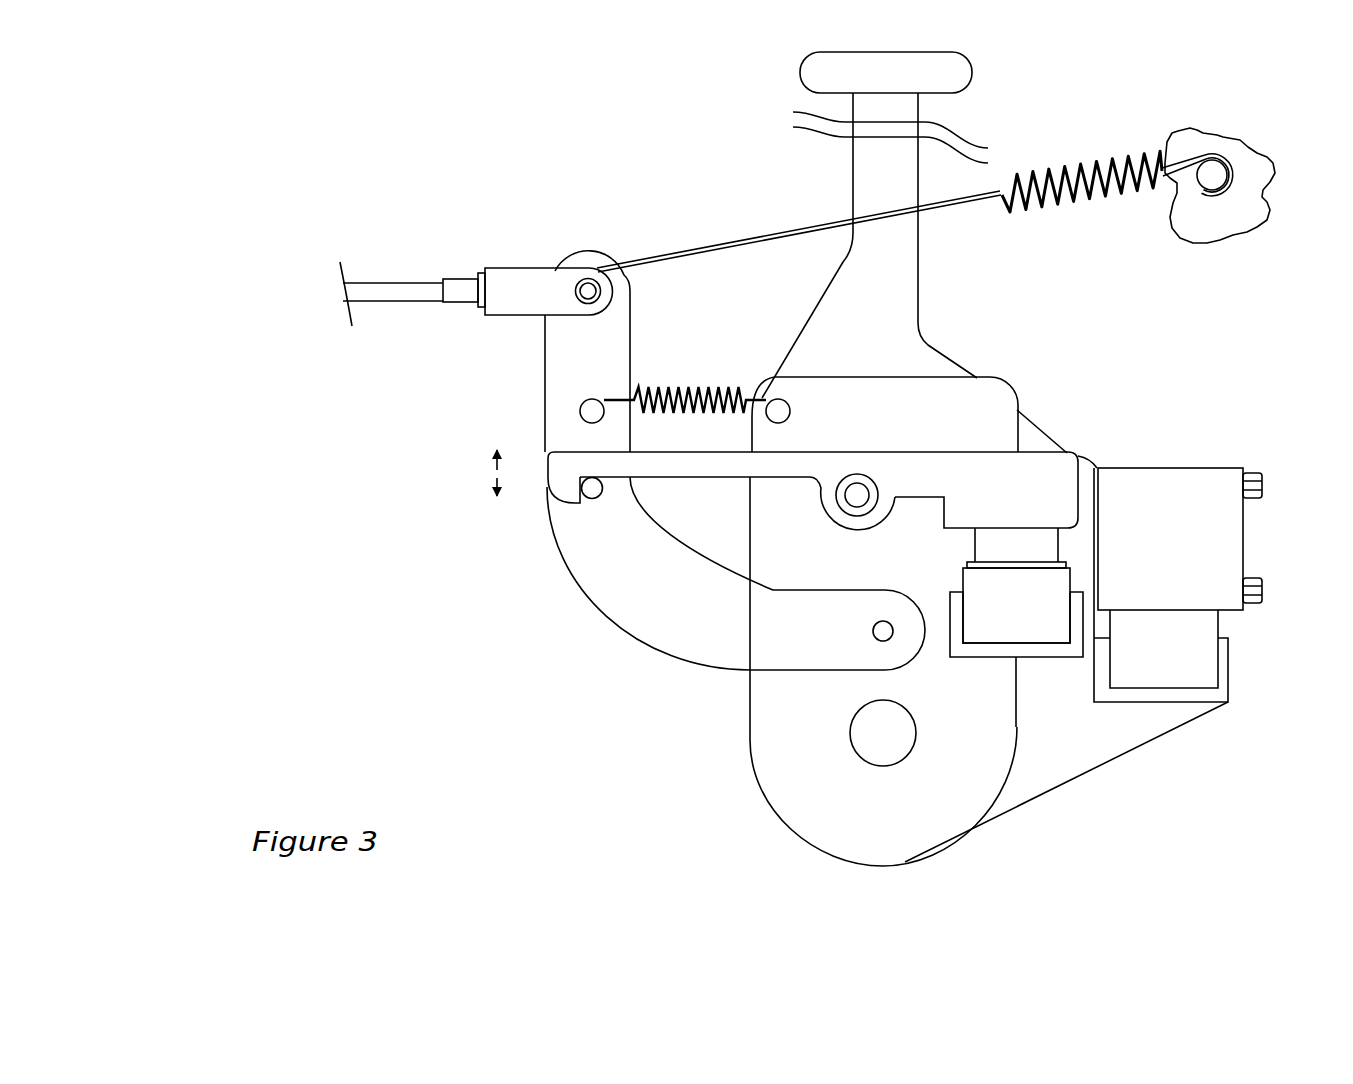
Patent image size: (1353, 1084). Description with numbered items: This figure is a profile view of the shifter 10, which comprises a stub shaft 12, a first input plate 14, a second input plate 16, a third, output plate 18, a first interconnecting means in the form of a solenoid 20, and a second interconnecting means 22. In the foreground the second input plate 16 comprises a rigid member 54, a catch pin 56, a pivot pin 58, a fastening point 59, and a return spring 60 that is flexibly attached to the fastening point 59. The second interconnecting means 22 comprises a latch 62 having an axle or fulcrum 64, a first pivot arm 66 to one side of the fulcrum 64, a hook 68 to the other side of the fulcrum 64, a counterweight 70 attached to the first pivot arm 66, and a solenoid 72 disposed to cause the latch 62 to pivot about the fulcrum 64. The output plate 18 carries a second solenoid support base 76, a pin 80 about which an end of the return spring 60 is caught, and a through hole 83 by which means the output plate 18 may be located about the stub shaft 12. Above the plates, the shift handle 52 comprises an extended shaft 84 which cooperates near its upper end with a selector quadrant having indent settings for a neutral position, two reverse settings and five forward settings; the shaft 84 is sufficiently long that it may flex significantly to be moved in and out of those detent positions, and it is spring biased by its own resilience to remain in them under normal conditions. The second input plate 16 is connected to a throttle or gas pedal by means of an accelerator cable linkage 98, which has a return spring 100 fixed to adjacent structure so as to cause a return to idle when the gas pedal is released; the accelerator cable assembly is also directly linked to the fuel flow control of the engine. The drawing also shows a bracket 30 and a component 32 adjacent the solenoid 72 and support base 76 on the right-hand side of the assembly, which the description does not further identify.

The shifter 10 is at (486, 163).
The stub shaft 12 is at (882, 745).
The first input plate 14 is at (880, 278).
The second input plate 16 is at (633, 565).
The output plate 18 is at (800, 715).
The solenoid 20 is at (1185, 642).
The second interconnecting means 22 is at (817, 508).
The bracket 30 is at (1233, 668).
The solenoid 32 is at (1200, 530).
The shift handle 52 is at (975, 73).
The rigid member 54 is at (574, 567).
The catch pin 56 is at (597, 500).
The pivot pin 58 is at (870, 632).
The fastening point 59 is at (586, 397).
The return spring 60 is at (680, 385).
The latch 62 is at (940, 472).
The fulcrum 64 is at (860, 487).
The first pivot arm 66 is at (1000, 472).
The hook 68 is at (563, 450).
The counterweight 70 is at (1055, 468).
The solenoid 72 is at (1043, 617).
The second solenoid support base 76 is at (1040, 662).
The pin 80 is at (772, 398).
The through hole 83 is at (848, 748).
The extended shaft 84 is at (850, 183).
The accelerator cable linkage 98 is at (411, 282).
The return spring 100 is at (1125, 160).